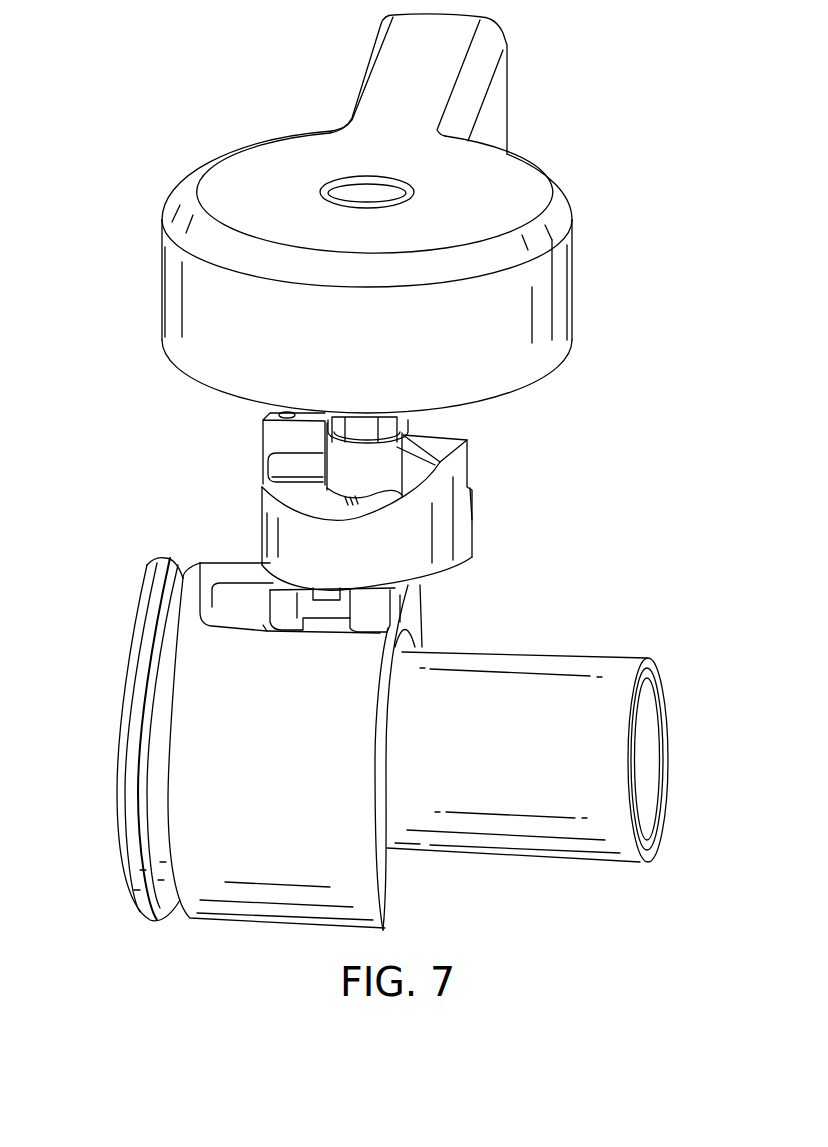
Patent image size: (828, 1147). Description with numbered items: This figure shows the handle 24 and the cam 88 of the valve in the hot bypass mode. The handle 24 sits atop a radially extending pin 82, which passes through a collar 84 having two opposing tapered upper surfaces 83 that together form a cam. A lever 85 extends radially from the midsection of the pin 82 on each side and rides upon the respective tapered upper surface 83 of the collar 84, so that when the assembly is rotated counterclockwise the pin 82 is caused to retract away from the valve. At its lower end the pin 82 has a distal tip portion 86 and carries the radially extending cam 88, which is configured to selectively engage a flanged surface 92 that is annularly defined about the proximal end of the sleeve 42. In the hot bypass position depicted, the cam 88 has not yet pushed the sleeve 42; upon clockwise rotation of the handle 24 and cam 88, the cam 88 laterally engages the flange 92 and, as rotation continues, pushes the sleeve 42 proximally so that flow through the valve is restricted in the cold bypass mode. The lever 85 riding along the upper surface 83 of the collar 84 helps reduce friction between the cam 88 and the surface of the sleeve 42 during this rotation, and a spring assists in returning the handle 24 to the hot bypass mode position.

The handle 24 is at (578, 278).
The pin 82 is at (360, 416).
The tapered upper surfaces 83 is at (470, 480).
The collar 84 is at (473, 518).
The lever 85 is at (287, 452).
The distal tip portion 86 is at (407, 605).
The cam 88 is at (273, 607).
The flanged surface 92 is at (263, 618).
The sleeve 42 is at (197, 762).